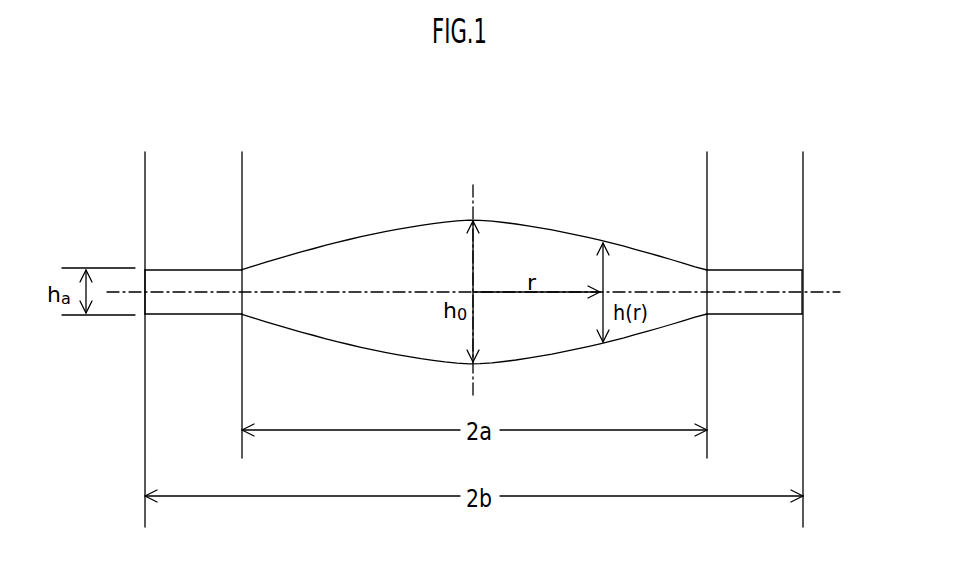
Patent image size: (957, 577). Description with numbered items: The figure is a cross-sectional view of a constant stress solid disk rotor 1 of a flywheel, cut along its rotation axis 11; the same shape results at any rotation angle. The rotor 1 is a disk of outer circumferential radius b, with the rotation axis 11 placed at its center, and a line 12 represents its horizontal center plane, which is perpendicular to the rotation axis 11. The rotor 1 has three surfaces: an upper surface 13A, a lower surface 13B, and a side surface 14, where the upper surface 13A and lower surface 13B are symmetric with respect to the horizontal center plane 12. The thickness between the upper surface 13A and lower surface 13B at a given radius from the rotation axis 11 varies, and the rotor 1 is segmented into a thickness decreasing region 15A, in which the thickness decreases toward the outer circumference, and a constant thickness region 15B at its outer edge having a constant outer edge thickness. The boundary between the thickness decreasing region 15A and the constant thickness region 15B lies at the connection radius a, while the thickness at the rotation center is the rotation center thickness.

The constant stress solid disk rotor 1 is at (307, 200).
The rotation axis 11 is at (473, 203).
The horizontal center plane 12 is at (827, 292).
The upper surface 13A is at (632, 248).
The lower surface 13B is at (330, 339).
The side surface 14 is at (803, 305).
The thickness decreasing region 15A is at (707, 170).
The constant thickness region 15B is at (242, 170).